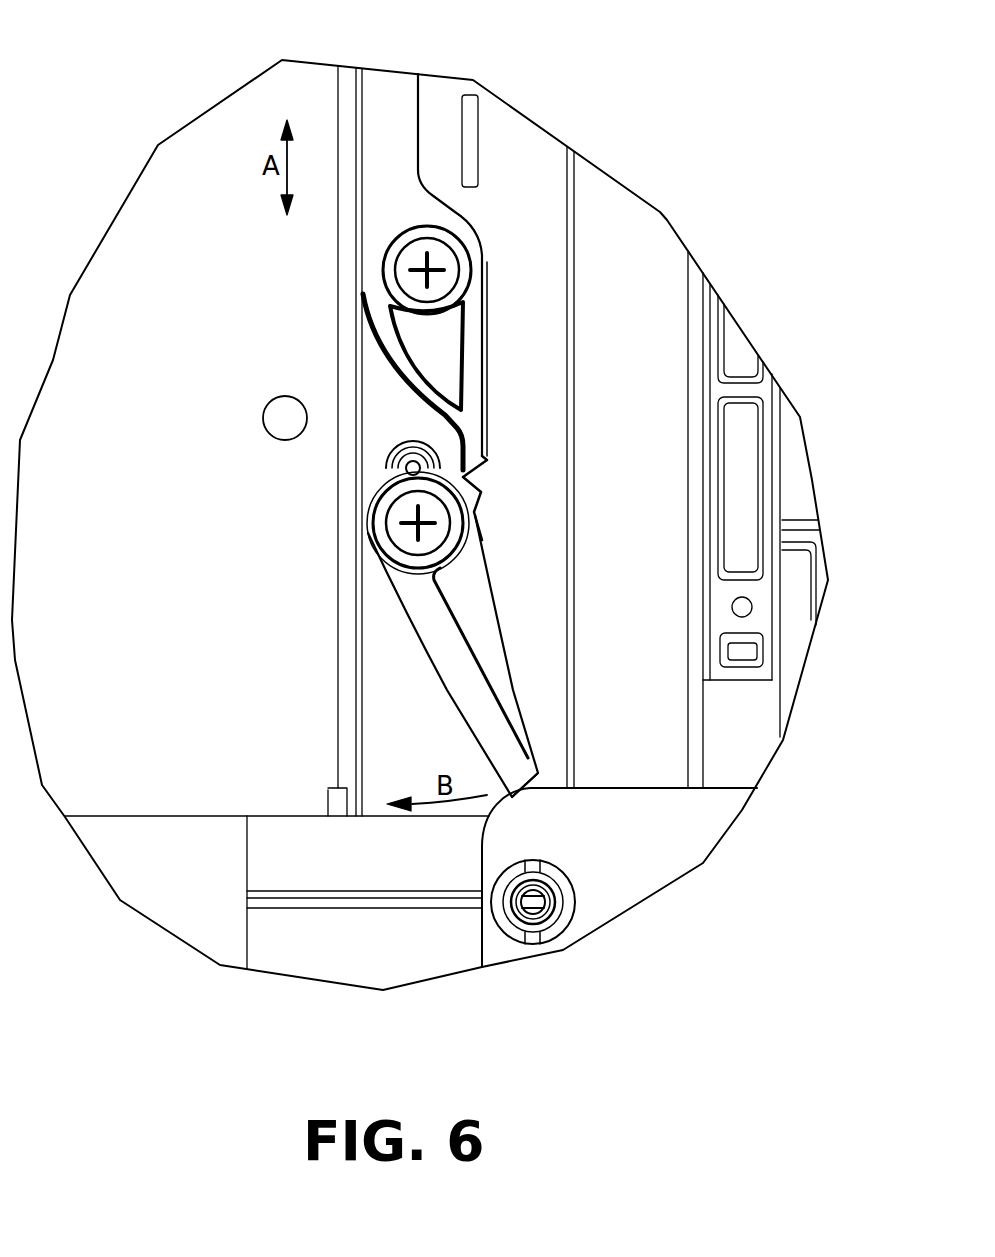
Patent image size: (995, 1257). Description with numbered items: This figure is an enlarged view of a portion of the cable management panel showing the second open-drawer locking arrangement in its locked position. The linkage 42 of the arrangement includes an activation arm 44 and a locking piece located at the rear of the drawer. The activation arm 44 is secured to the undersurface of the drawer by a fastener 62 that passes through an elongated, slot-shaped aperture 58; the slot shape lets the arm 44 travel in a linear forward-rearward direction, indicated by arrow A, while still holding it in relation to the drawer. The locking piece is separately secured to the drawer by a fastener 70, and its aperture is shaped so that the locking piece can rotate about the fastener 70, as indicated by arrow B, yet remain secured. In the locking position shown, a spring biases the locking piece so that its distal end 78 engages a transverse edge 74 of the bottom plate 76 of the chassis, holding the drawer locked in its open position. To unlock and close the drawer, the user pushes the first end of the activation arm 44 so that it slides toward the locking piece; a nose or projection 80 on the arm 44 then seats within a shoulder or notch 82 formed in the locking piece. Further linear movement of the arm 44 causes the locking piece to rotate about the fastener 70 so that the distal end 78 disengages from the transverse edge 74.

The activation arm 44 is at (402, 122).
The aperture 58 is at (427, 227).
The fastener 62 is at (396, 261).
The notch 82 is at (442, 452).
The projection 80 is at (475, 447).
The fastener 70 is at (400, 511).
The linkage 42 is at (446, 653).
The transverse edge 74 is at (623, 788).
The bottom plate 76 is at (675, 847).
The distal end 78 is at (518, 775).